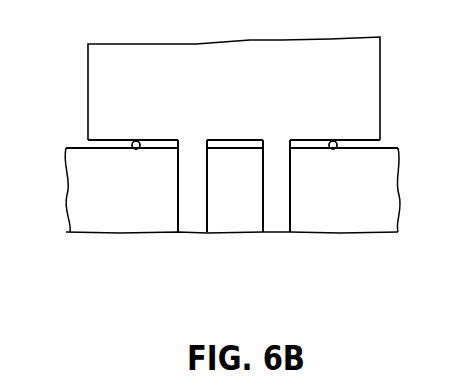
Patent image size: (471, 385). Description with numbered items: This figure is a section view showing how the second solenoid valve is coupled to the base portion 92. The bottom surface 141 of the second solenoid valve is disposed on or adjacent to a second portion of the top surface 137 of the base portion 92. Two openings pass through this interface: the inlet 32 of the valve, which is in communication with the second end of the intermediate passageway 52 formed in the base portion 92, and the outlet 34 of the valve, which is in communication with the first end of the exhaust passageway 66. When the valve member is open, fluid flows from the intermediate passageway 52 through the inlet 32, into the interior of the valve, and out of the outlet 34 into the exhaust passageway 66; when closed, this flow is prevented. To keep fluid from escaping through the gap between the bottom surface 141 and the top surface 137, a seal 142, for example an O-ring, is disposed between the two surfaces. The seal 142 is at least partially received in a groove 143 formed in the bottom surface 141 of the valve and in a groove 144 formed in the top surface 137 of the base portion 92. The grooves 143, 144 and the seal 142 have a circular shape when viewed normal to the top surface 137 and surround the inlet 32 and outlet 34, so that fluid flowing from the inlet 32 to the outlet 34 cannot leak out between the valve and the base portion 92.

The inlet 32 is at (195, 140).
The outlet 34 is at (276, 140).
The intermediate passageway 52 is at (192, 228).
The exhaust passageway 66 is at (278, 228).
The base portion 92 is at (98, 217).
The top surface 137 is at (77, 146).
The bottom surface 141 is at (363, 146).
The seal 142 is at (138, 141).
The groove 143 is at (133, 141).
The groove 144 is at (134, 149).